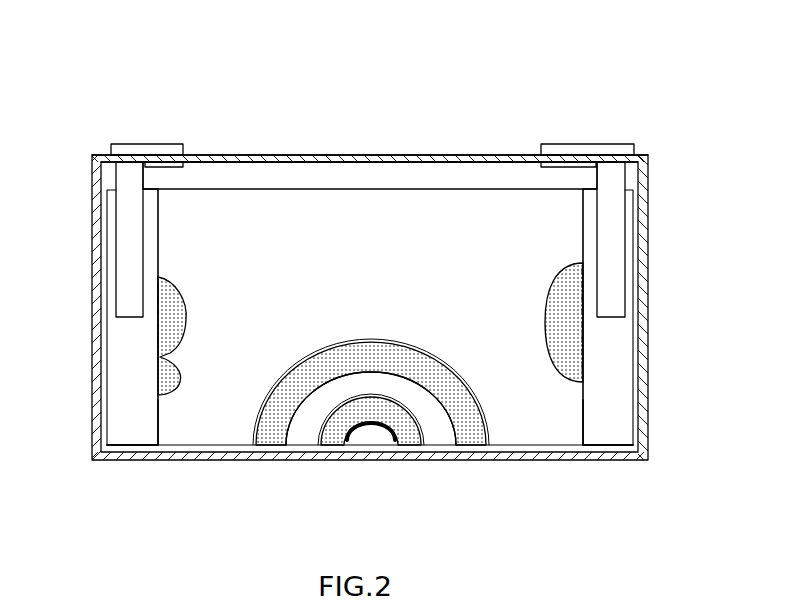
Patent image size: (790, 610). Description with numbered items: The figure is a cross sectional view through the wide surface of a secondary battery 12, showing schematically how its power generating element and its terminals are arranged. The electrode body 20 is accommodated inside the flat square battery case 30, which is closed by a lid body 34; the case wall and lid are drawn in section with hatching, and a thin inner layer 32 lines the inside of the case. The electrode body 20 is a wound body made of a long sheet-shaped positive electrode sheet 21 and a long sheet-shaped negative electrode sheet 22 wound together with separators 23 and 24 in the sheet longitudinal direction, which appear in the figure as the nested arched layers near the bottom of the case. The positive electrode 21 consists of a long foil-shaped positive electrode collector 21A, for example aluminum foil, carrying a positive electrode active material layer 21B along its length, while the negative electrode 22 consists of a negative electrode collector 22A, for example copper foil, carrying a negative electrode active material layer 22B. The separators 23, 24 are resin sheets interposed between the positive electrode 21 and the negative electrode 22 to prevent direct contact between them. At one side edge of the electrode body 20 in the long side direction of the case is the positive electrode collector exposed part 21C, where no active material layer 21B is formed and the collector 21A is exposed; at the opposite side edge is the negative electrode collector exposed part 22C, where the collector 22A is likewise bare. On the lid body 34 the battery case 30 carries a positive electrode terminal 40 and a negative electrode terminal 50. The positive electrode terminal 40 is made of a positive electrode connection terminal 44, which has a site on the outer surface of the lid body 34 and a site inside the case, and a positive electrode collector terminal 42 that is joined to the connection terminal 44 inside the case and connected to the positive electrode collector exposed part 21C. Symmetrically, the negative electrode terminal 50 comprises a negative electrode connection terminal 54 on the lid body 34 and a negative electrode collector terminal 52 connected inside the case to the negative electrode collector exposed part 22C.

The secondary battery 12 is at (78, 24).
The electrode body 20 is at (293, 180).
The positive electrode sheet 21 is at (330, 432).
The positive electrode collector 21A is at (105, 379).
The positive electrode active material layer 21B is at (185, 313).
The positive electrode collector exposed part 21C is at (133, 462).
The negative electrode sheet 22 is at (274, 437).
The negative electrode collector 22A is at (640, 413).
The negative electrode active material layer 22B is at (548, 305).
The negative electrode collector exposed part 22C is at (603, 462).
The separator 23 is at (307, 432).
The separator 24 is at (368, 432).
The battery case 30 is at (97, 140).
The insulating liner 32 is at (110, 178).
The lid body 34 is at (395, 153).
The positive electrode terminal 40 is at (167, 114).
The positive electrode collector terminal 42 is at (130, 276).
The positive electrode connection terminal 44 is at (172, 144).
The negative electrode terminal 50 is at (558, 111).
The negative electrode collector terminal 52 is at (612, 270).
The negative electrode connection terminal 54 is at (552, 143).